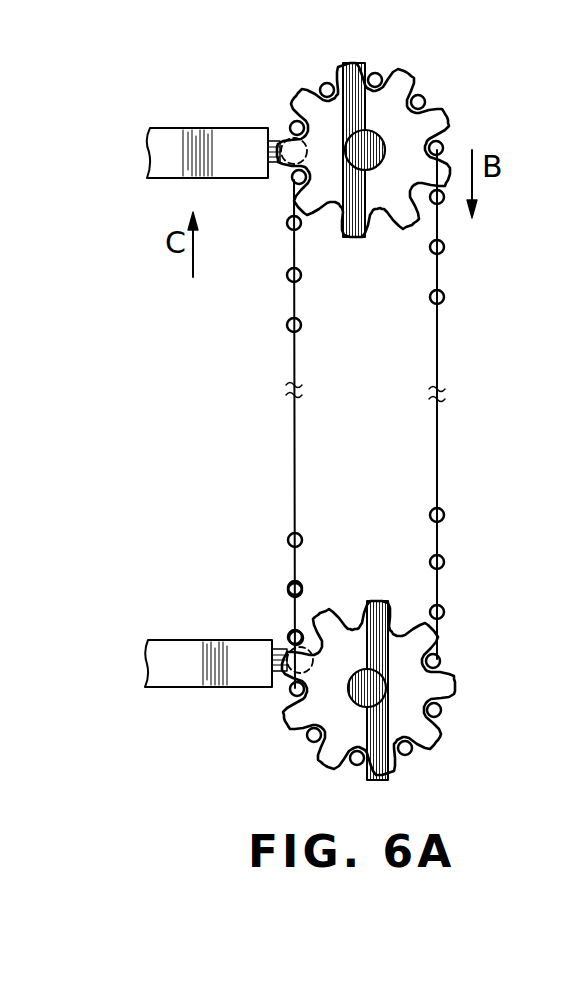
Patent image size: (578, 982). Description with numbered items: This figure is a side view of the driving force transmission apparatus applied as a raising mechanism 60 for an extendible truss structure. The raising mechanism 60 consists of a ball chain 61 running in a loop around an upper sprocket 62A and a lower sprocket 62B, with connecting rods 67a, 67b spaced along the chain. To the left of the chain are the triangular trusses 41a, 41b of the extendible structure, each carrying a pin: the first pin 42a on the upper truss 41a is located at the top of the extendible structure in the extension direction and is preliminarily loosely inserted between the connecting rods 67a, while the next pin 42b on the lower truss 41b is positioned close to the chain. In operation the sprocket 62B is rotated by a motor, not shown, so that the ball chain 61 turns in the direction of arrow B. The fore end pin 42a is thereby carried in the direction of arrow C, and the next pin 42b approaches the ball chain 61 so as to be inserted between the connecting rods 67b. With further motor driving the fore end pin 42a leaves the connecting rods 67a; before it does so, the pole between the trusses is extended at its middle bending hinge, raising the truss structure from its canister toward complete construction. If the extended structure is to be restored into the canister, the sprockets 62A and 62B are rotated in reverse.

The triangular truss 41a is at (172, 128).
The first pin 42a is at (278, 137).
The connecting rods 67a is at (293, 120).
The sprocket 62A is at (442, 122).
The raising mechanism 60 is at (462, 442).
The ball chain 61 is at (293, 357).
The triangular truss 41b is at (178, 643).
The next pin 42b is at (280, 673).
The connecting rods 67b is at (293, 632).
The sprocket 62B is at (455, 686).